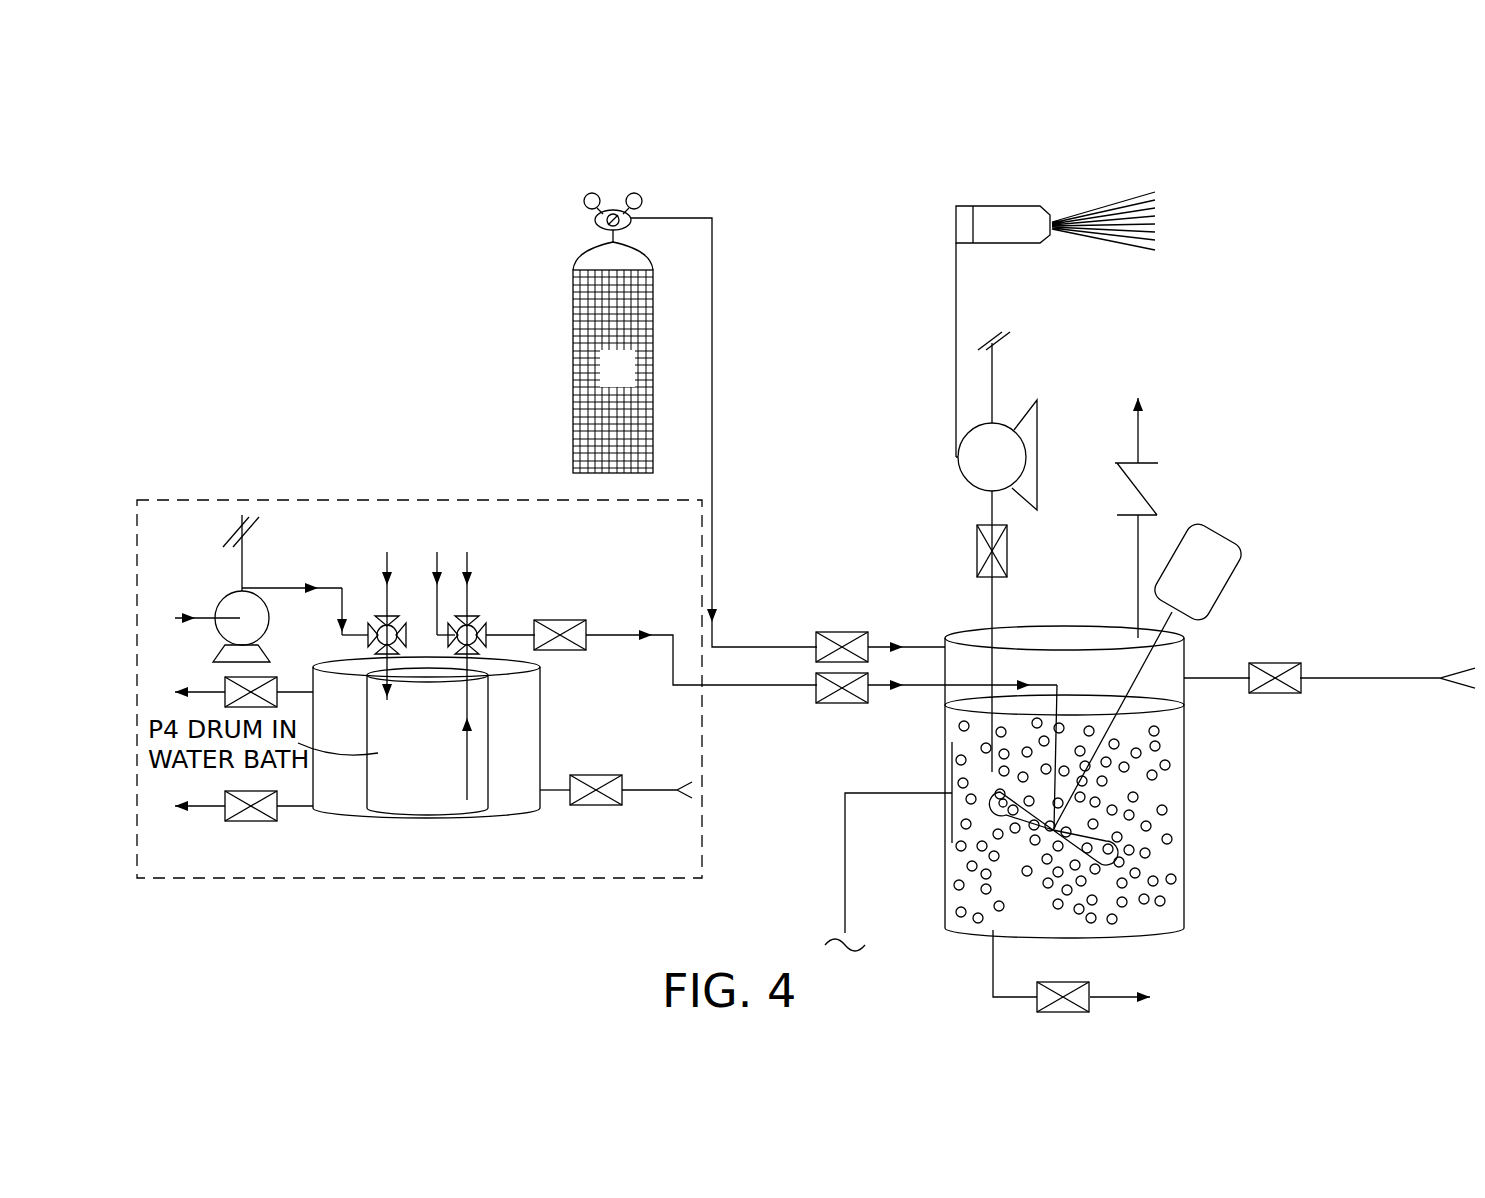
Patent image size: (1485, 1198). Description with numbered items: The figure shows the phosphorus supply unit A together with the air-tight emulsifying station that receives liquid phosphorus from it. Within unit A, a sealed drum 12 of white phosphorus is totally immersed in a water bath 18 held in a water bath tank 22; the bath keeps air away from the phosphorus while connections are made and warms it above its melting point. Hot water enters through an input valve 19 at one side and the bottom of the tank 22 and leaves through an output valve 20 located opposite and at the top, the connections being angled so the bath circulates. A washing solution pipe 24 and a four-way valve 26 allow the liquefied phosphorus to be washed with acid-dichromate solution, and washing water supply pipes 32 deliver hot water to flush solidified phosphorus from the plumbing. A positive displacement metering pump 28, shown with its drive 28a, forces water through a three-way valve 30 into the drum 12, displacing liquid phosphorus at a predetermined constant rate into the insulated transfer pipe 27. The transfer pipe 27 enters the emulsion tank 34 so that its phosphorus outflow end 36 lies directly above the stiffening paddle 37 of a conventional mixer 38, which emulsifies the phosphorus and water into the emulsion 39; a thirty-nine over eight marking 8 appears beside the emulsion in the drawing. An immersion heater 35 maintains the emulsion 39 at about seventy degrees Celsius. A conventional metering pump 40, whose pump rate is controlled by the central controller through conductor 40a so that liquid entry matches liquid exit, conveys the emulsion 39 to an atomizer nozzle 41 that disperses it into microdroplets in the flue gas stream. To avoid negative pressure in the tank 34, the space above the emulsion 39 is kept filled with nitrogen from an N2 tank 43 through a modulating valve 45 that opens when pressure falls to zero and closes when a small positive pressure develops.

The unit A is at (420, 880).
The drum 12 is at (368, 818).
The water bath 18 is at (528, 720).
The input valve 19 is at (597, 776).
The output valve 20 is at (224, 683).
The water bath tank 22 is at (427, 820).
The washing solution pipe 24 is at (468, 567).
The four-way valve 26 is at (480, 638).
The transfer pipe 27 is at (745, 688).
The positive displacement metering pump 28 is at (228, 605).
The pump shaft 28a is at (277, 560).
The three-way valve 30 is at (367, 643).
The washing water supply pipes 32 is at (437, 603).
The emulsion tank 34 is at (1187, 778).
The immersion heater 35 is at (948, 770).
The P4 outflow end 36 is at (1050, 827).
The stiffening paddle 37 is at (1105, 858).
The mixer 38 is at (1147, 672).
The emulsion 39 is at (1034, 906).
The product 8 is at (1067, 826).
The metering pump 40 is at (967, 462).
The conductor 40a is at (992, 382).
The atomizer nozzle 41 is at (1020, 240).
The N2 tank 43 is at (575, 350).
The modulating valve 45 is at (845, 632).